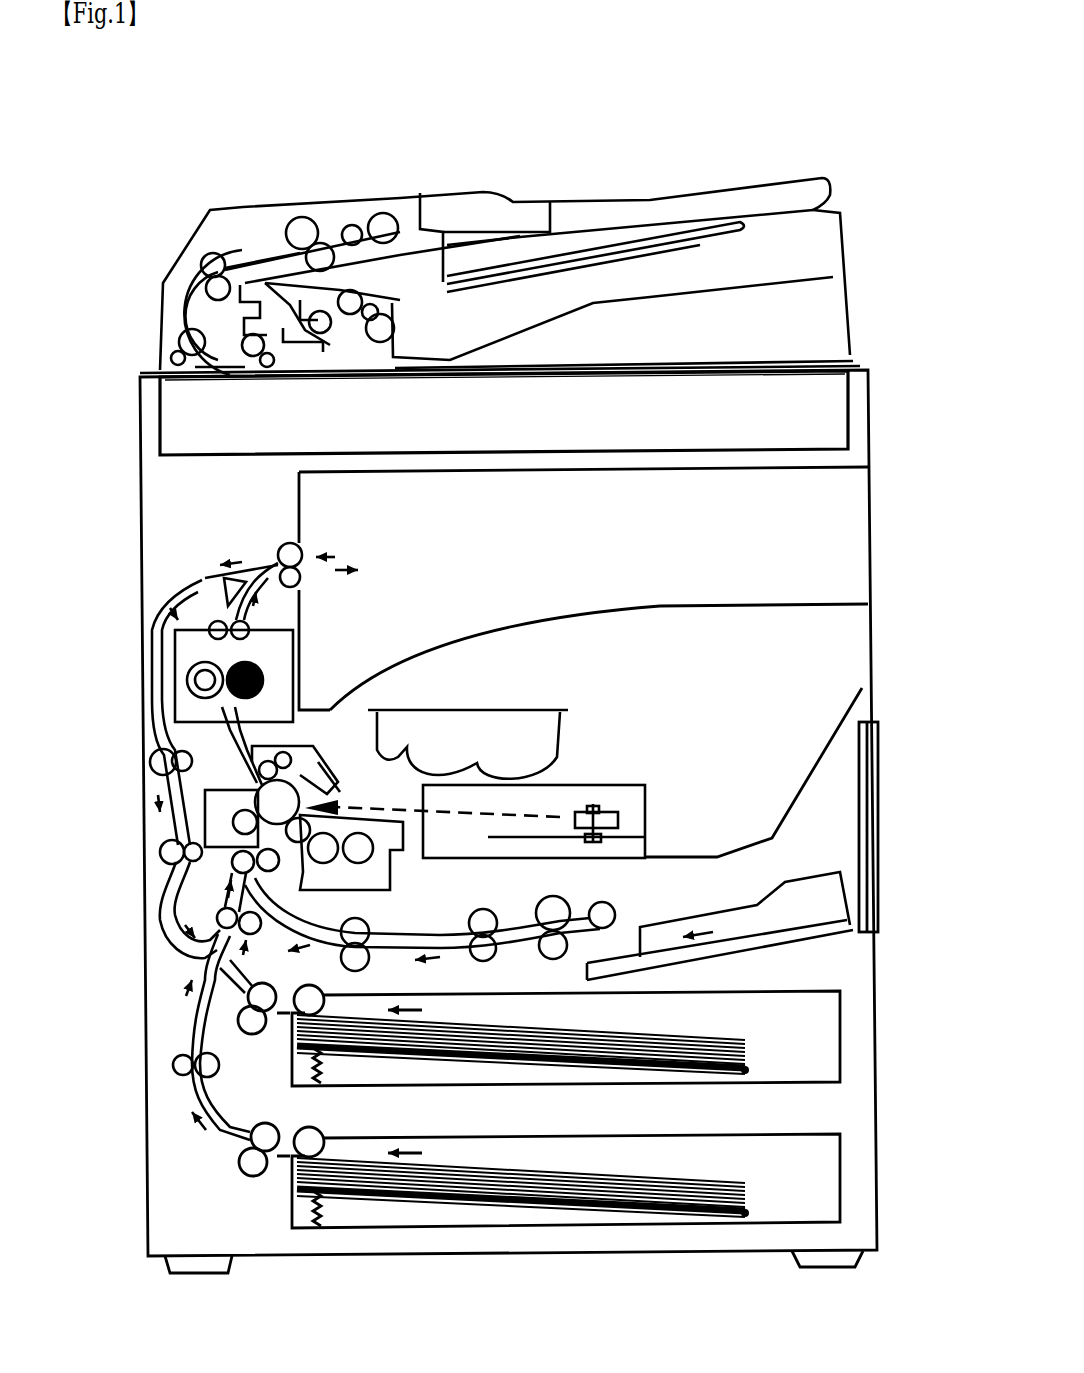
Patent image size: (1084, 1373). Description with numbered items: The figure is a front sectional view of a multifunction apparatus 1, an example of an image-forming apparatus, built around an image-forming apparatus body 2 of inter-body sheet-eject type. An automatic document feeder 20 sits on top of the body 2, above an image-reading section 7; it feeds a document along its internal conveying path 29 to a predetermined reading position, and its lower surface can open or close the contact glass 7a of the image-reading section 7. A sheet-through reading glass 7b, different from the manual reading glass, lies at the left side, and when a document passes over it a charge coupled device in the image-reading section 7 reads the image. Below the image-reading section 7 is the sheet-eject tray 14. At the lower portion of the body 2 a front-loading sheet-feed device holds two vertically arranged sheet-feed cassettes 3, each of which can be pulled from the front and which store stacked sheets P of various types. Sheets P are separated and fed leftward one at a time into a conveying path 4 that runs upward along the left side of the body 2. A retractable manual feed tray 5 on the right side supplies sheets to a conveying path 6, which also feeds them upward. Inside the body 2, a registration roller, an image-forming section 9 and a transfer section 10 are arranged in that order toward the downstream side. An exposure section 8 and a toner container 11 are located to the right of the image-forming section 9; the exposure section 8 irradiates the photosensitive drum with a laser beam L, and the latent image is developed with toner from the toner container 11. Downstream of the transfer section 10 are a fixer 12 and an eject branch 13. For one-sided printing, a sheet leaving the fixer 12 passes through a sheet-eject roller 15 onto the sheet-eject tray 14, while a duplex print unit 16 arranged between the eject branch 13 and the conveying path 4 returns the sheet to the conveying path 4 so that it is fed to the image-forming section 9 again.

The multifunction apparatus 1 is at (708, 128).
The image-forming apparatus body 2 is at (907, 362).
The sheet-feed cassette 3 is at (846, 1042).
The conveying path 4 is at (181, 1031).
The manual feed tray 5 is at (830, 900).
The conveying path 6 is at (457, 912).
The image-reading section 7 is at (805, 417).
The contact glass 7a is at (610, 374).
The sheet-through reading glass 7b is at (225, 372).
The exposure section 8 is at (615, 783).
The image-forming section 9 is at (322, 740).
The transfer section 10 is at (205, 820).
The toner container 11 is at (512, 710).
The fixer 12 is at (174, 670).
The eject branch 13 is at (226, 548).
The sheet-eject tray 14 is at (400, 662).
The sheet-eject roller 15 is at (306, 540).
The duplex print unit 16 is at (158, 751).
The automatic document feeder 20 is at (453, 188).
The conveying path 29 is at (262, 255).
The laser beam L is at (415, 818).
The sheet P is at (560, 1202).